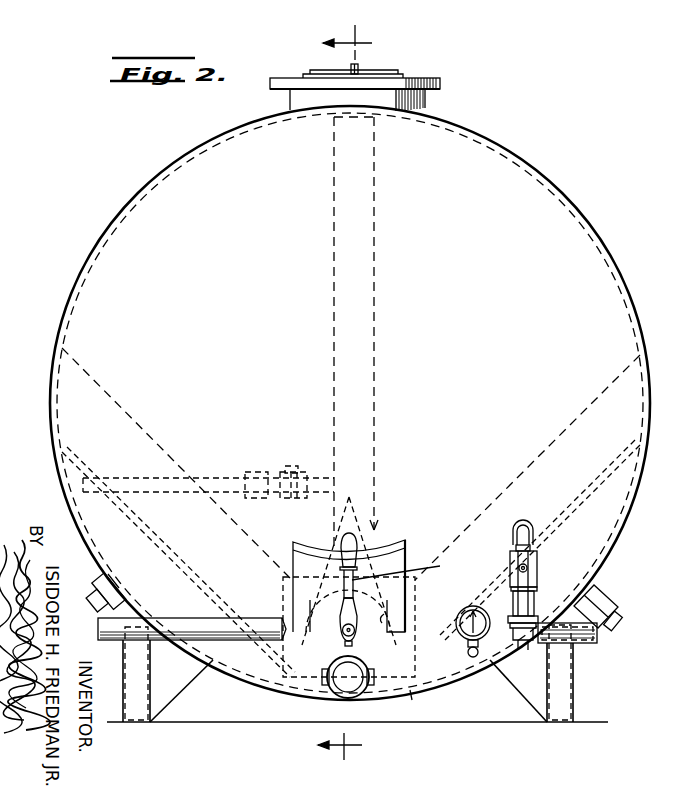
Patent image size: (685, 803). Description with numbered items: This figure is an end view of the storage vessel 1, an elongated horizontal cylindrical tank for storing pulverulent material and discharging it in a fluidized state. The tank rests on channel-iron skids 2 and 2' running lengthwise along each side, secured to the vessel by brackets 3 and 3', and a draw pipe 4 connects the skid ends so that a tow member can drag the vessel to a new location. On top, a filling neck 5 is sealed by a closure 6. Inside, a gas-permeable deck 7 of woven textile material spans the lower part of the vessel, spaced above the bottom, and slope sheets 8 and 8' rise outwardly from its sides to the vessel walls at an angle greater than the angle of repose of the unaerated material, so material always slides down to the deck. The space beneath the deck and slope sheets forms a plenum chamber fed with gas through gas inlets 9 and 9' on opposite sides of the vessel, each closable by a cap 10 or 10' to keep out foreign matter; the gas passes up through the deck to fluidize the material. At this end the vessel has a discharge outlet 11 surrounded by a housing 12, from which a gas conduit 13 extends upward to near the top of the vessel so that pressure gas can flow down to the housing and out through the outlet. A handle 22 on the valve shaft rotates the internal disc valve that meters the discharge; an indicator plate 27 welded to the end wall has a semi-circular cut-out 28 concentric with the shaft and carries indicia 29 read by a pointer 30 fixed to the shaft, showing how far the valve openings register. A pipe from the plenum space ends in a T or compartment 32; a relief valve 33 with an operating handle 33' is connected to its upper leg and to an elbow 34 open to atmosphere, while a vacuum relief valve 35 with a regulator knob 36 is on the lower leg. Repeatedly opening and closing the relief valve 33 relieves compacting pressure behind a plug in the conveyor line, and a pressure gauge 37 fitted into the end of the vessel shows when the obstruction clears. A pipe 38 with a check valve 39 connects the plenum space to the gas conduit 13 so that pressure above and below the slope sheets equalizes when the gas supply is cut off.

The storage vessel 1 is at (607, 243).
The skid 2 is at (136, 697).
The skid 2' is at (577, 673).
The bracket 3 is at (261, 398).
The bracket 3' is at (514, 691).
The draw pipe 4 is at (594, 646).
The filling neck 5 is at (428, 106).
The closure 6 is at (378, 75).
The gas-permeable deck 7 is at (417, 701).
The slope sheet 8 is at (176, 463).
The slope sheet 8' is at (527, 467).
The gas inlet 9 is at (94, 591).
The gas inlet 9' is at (602, 589).
The cap 10 is at (87, 603).
The cap 10' is at (637, 603).
The discharge outlet 11 is at (342, 688).
The housing 12 is at (374, 543).
The gas conduit 13 is at (372, 413).
The handle 22 is at (405, 566).
The indicator plate 27 is at (405, 548).
The semi-circular cut-out 28 is at (385, 622).
The indicia 29 is at (347, 600).
The pointer 30 is at (343, 621).
The T or compartment 32 is at (536, 602).
The relief valve 33 is at (539, 583).
The operating handle 33' is at (493, 564).
The elbow 34 is at (518, 532).
The vacuum relief valve 35 is at (520, 630).
The regulator knob 36 is at (531, 645).
The pressure gauge 37 is at (456, 623).
The pipe 38 is at (322, 478).
The check valve 39 is at (290, 498).